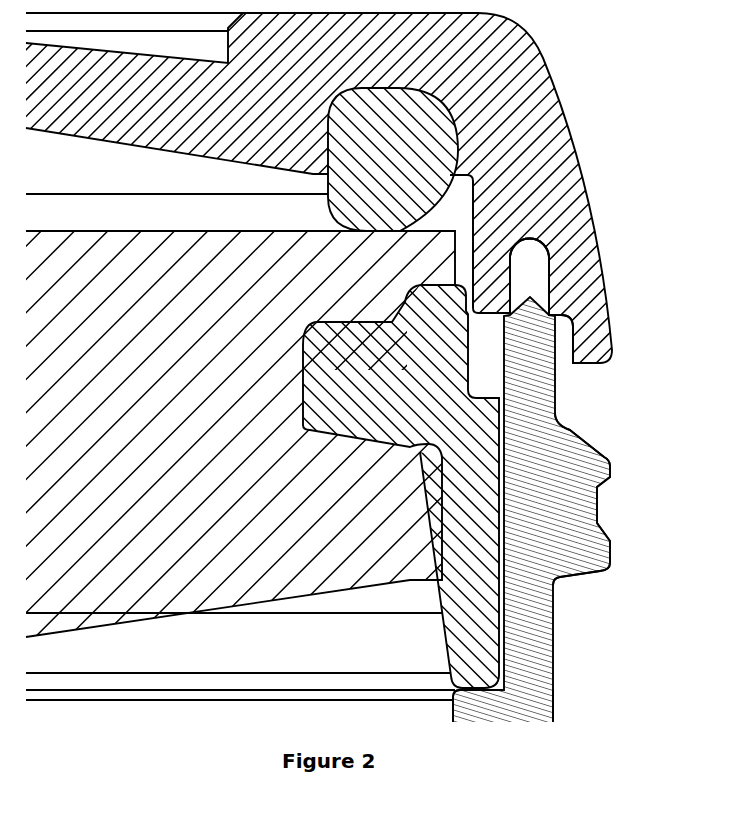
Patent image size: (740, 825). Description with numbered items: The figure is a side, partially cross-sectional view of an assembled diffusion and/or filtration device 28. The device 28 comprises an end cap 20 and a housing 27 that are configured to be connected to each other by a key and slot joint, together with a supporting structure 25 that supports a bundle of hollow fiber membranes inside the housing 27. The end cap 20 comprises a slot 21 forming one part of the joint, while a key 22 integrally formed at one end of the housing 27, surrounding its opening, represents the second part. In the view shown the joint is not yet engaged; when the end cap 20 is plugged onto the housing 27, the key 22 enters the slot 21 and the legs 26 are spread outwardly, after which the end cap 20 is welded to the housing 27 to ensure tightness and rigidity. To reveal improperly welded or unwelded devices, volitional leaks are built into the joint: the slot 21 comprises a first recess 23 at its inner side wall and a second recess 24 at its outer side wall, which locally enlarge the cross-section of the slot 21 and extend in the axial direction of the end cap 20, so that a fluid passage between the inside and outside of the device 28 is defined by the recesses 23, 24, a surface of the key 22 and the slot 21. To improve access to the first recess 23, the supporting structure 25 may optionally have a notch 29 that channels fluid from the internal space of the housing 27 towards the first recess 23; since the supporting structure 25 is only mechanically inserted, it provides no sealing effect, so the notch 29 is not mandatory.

The end cap 20 is at (522, 46).
The slot 21 is at (520, 274).
The key 22 is at (526, 349).
The first recess 23 is at (532, 250).
The second recess 24 is at (557, 288).
The supporting structure 25 is at (470, 537).
The legs 26 is at (490, 271).
The housing 27 is at (525, 638).
The diffusion and/or filtration device 28 is at (145, 722).
The notch 29 is at (507, 448).